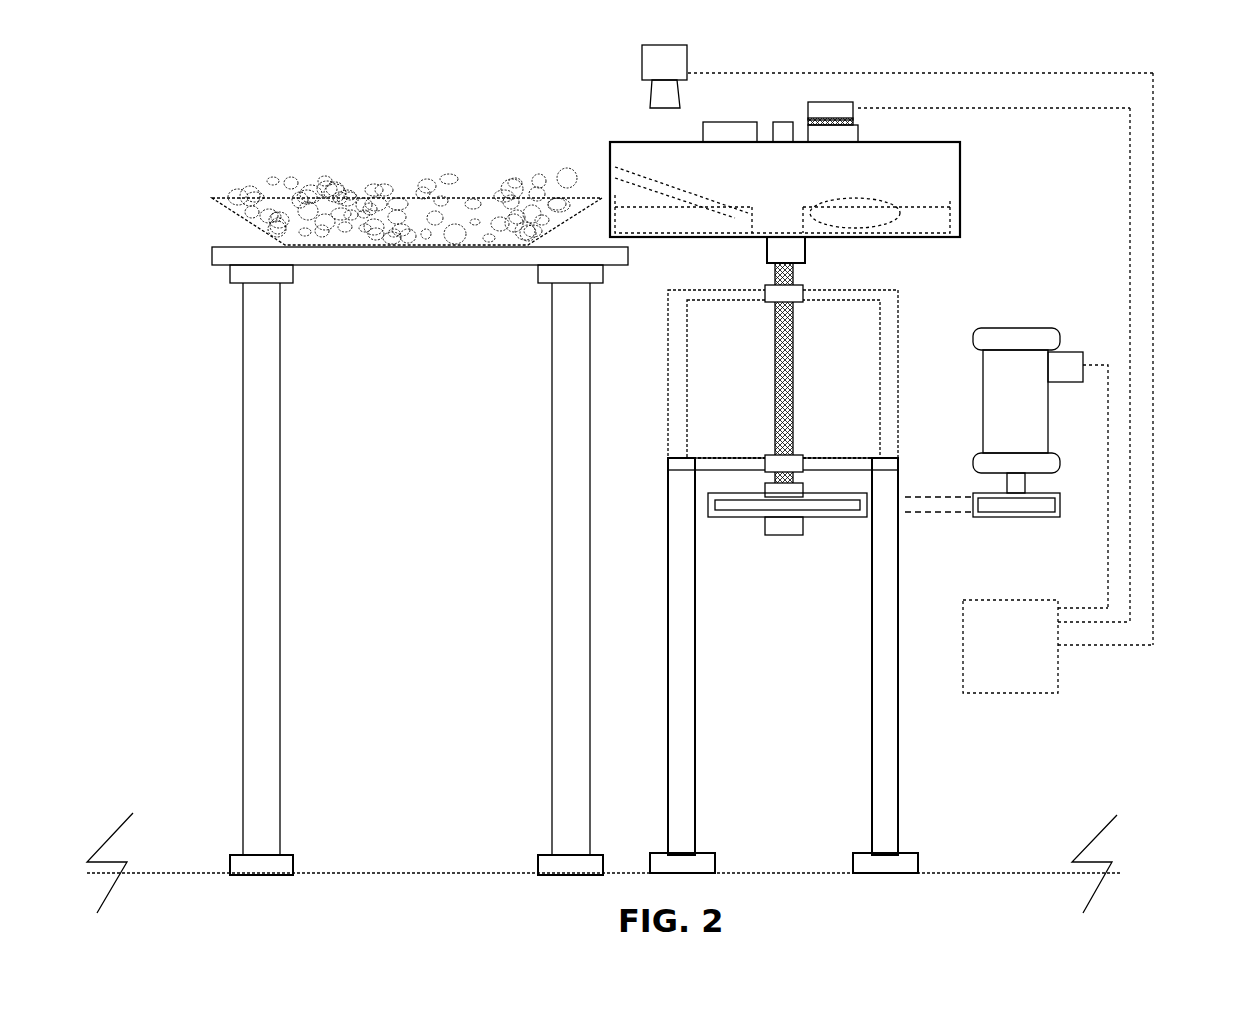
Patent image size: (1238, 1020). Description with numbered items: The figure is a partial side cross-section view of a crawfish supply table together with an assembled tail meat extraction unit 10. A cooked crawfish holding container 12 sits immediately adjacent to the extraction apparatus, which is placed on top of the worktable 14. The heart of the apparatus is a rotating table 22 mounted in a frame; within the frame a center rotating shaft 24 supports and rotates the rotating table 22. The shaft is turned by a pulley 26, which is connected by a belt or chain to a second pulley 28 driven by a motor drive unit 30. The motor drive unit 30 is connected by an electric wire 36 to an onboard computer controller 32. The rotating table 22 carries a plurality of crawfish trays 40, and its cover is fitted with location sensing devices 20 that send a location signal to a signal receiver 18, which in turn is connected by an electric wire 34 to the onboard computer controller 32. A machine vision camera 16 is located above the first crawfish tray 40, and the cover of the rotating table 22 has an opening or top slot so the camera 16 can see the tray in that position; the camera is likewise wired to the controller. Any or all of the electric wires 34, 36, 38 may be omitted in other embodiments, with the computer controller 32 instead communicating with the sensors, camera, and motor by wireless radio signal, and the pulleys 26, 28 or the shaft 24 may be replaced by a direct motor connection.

The tail meat extraction unit 10 is at (192, 133).
The cooked crawfish holding container 12 is at (352, 170).
The worktable 14 is at (237, 440).
The camera 16 is at (697, 60).
The signal receiver 18 is at (845, 93).
The location sensing devices 20 is at (875, 128).
The rotating table 22 is at (885, 248).
The center rotating shaft 24 is at (805, 350).
The pulley 26 is at (815, 525).
The second pulley 28 is at (953, 523).
The motor drive unit 30 is at (978, 405).
The onboard computer controller 32 is at (1058, 646).
The electric wire 34 is at (1133, 598).
The electric wire 36 is at (1098, 350).
The electric wire 38 is at (1168, 403).
The crawfish trays 40 is at (697, 180).